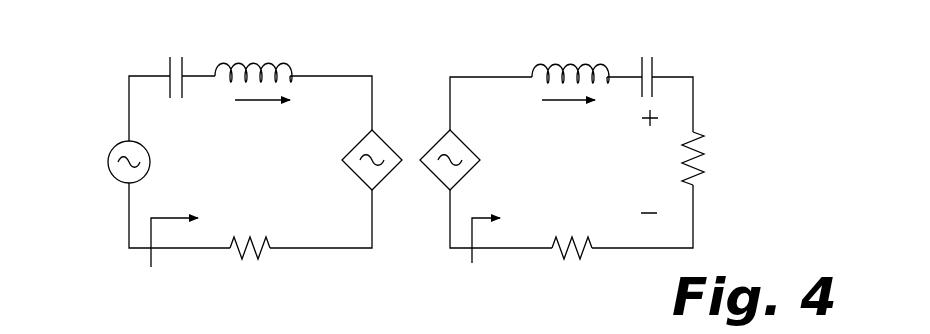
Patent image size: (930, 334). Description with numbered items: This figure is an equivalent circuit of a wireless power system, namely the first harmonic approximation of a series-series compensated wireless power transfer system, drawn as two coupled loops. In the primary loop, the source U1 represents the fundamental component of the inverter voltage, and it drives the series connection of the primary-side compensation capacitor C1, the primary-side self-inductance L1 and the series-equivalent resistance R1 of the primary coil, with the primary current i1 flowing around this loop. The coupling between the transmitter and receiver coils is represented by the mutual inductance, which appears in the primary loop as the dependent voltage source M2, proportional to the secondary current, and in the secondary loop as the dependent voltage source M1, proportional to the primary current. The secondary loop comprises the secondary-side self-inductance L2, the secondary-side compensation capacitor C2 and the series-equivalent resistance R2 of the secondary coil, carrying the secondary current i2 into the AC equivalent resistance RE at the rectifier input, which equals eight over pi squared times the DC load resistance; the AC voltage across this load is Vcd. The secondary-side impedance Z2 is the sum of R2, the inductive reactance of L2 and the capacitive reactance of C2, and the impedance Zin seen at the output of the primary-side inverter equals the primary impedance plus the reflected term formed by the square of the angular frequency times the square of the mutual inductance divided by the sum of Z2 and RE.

The fundamental component of the inverter voltage U1 is at (111, 162).
The primary-side compensation capacitor C1 is at (186, 58).
The primary-side self-inductance L1 is at (253, 50).
The primary-side current i1 is at (250, 103).
The series-equivalent resistance of the primary-side coil R1 is at (253, 224).
The impedance at the output of the primary-side inverter Zin is at (167, 261).
The induced voltage source -jωMi2 M2 is at (336, 160).
The induced voltage source +jωMi1 M1 is at (486, 160).
The secondary-side self-inductance L2 is at (570, 51).
The secondary-side current i2 is at (555, 104).
The secondary-side compensation capacitor C2 is at (654, 57).
The AC equivalent resistance at the rectifier input RE is at (715, 158).
The AC voltage across the load Vcd is at (653, 161).
The series-equivalent resistance of the secondary-side coil R2 is at (572, 224).
The secondary-side impedance Z2 is at (477, 261).